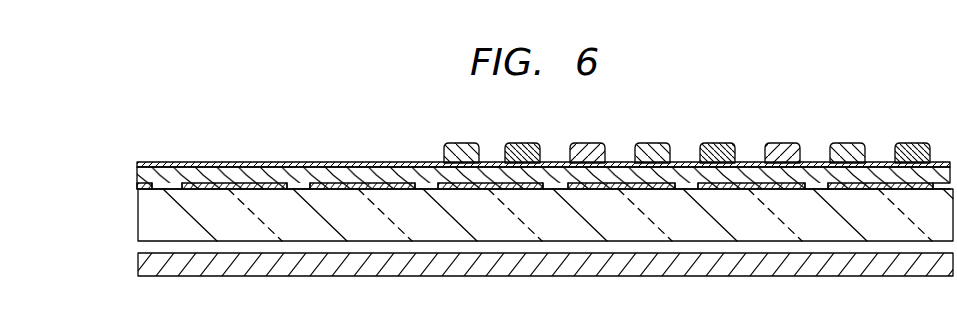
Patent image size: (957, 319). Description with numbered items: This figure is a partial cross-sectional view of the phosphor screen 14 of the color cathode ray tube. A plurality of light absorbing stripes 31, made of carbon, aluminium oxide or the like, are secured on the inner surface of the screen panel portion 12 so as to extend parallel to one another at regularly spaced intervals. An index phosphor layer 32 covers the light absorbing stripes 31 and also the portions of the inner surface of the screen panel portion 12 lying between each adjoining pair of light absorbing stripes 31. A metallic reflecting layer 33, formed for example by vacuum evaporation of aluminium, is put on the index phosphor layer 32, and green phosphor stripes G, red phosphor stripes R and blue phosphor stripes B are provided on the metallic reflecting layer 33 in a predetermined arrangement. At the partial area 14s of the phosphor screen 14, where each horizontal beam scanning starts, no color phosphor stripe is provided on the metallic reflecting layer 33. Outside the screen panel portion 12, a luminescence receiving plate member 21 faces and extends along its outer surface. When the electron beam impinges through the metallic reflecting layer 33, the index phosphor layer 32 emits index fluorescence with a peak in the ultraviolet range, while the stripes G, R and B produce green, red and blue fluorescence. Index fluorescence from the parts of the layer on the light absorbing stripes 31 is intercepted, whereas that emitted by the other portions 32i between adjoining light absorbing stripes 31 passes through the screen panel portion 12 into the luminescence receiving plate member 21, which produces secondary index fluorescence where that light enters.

The phosphor screen 14 is at (745, 135).
The partial area of the phosphor screen 14s is at (288, 146).
The metallic reflecting layer 33 is at (195, 163).
The light absorbing stripes 31 is at (239, 171).
The index phosphor layer 32 is at (380, 177).
The portions of the index phosphor layer 32i is at (816, 176).
The screen panel portion 12 is at (313, 233).
The luminescence receiving plate member 21 is at (569, 268).
The green phosphor stripes G is at (460, 143).
The red phosphor stripes R is at (520, 143).
The blue phosphor stripes B is at (589, 143).